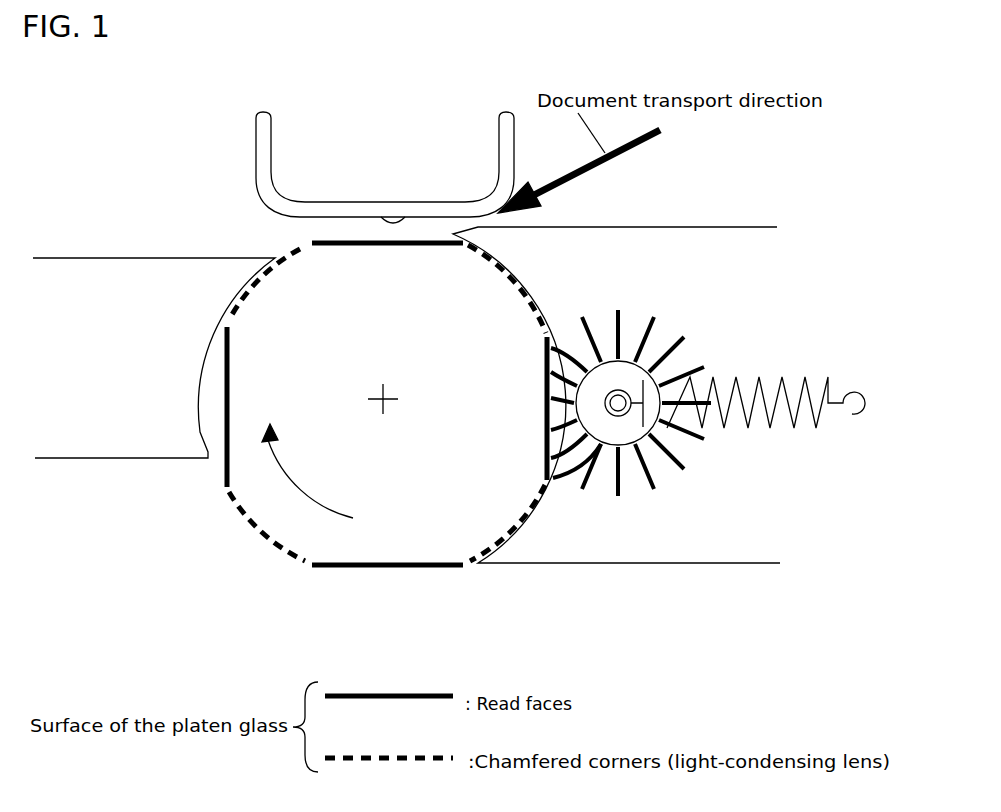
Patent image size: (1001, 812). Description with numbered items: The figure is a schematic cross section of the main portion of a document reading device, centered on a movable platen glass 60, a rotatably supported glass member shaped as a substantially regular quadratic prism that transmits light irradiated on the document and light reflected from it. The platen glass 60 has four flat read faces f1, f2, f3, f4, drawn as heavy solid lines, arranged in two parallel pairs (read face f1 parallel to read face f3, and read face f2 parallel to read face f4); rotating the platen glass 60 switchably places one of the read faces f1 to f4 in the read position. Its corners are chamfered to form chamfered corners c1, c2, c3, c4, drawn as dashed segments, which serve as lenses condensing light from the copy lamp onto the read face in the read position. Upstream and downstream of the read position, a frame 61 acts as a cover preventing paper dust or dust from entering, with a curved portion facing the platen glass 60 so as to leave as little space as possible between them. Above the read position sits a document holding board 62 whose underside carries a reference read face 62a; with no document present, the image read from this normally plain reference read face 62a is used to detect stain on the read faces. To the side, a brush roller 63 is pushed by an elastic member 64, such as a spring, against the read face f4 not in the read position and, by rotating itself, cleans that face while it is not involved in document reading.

The movable platen glass 60 is at (404, 436).
The frame 61 is at (143, 459).
The document holding board 62 is at (385, 167).
The reference read face 62a is at (403, 218).
The brush roller 63 is at (676, 326).
The elastic member 64 is at (738, 377).
The read face f1 is at (382, 243).
The read face f2 is at (224, 398).
The read face f3 is at (343, 567).
The read face f4 is at (570, 470).
The chamfered corner c1 is at (247, 287).
The chamfered corner c2 is at (262, 528).
The chamfered corner c3 is at (520, 536).
The chamfered corner c4 is at (517, 272).